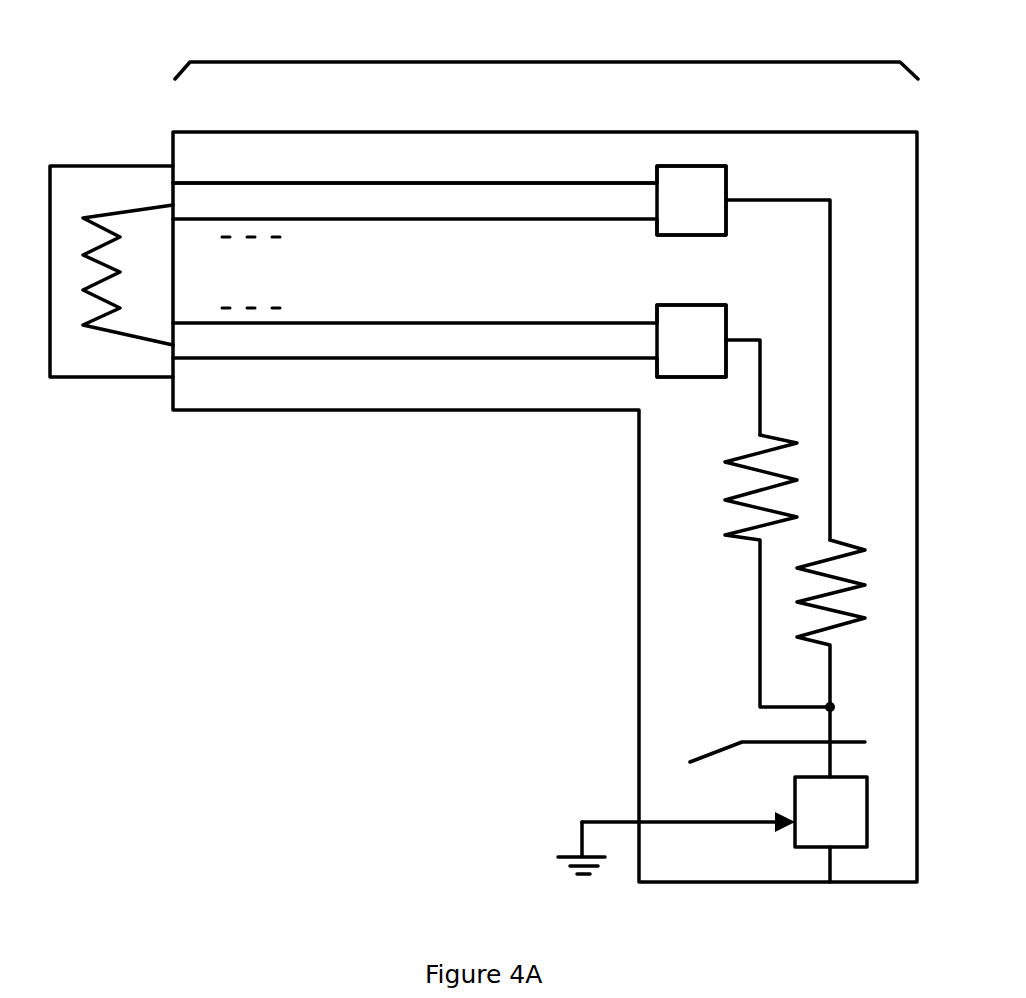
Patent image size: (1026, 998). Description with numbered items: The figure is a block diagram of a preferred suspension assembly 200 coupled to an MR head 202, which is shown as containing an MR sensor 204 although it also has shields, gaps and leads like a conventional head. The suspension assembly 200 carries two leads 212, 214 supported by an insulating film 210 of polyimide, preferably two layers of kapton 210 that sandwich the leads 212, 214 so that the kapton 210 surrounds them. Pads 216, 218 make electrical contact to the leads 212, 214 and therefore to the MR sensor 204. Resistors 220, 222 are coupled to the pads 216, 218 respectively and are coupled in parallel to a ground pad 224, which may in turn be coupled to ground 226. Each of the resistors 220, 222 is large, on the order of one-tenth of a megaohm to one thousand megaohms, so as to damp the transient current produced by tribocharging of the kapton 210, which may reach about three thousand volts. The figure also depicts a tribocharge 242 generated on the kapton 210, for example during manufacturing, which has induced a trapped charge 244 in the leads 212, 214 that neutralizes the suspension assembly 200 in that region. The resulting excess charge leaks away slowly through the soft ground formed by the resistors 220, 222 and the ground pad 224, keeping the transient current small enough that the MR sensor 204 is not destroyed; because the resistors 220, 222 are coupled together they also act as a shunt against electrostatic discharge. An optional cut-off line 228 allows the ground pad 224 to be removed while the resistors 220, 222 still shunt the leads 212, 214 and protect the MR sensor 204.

The suspension assembly 200 is at (545, 62).
The MR head 202 is at (68, 166).
The MR sensor 204 is at (84, 325).
The insulating film 210 is at (432, 130).
The lead 212 is at (512, 183).
The lead 214 is at (422, 358).
The pad 216 is at (673, 166).
The pad 218 is at (692, 377).
The resistor 220 is at (737, 462).
The resistor 222 is at (797, 603).
The ground pad 224 is at (830, 847).
The ground 226 is at (557, 857).
The cut-off line 228 is at (760, 745).
The tribocharge 242 is at (285, 237).
The trapped charge 244 is at (220, 187).